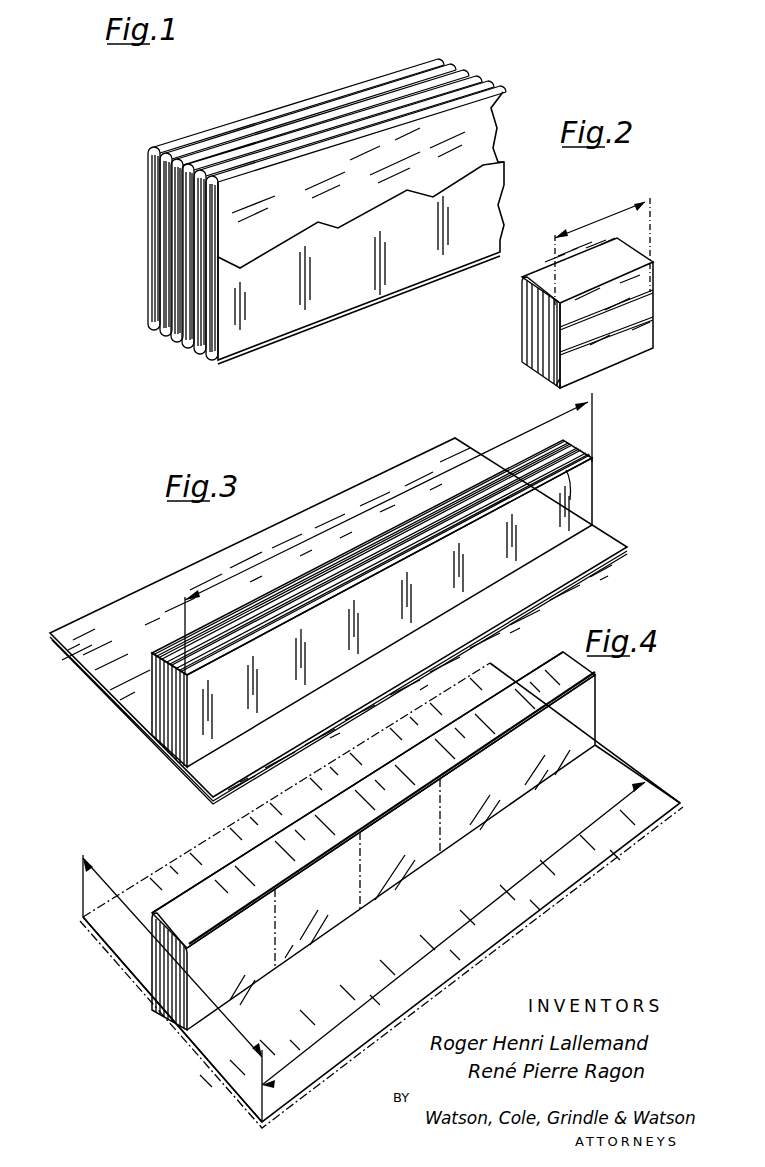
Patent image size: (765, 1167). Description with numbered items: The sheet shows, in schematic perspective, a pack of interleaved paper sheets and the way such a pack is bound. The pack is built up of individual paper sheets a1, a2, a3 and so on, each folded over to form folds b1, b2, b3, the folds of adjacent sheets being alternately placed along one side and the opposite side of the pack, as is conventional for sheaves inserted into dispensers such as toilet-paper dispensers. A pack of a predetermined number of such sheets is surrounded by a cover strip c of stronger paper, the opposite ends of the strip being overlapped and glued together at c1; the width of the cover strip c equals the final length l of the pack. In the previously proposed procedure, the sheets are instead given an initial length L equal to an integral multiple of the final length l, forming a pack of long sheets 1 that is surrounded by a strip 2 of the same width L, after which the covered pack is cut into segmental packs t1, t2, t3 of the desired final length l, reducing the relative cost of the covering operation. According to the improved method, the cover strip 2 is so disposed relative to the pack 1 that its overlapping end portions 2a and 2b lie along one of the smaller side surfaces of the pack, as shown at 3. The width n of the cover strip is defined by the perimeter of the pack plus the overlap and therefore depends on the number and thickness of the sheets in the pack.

In FIG. 1, the interleaved paper sheet a1 is at (148, 190).
In FIG. 2, the interleaved paper sheet a1 is at (528, 302).
In FIG. 1, the interleaved paper sheet a2 is at (160, 233).
In FIG. 2, the interleaved paper sheet a2 is at (532, 332).
In FIG. 1, the interleaved paper sheet a3 is at (172, 260).
In FIG. 2, the interleaved paper sheet a3 is at (527, 360).
In FIG. 1, the fold b1 is at (152, 147).
In FIG. 1, the fold b2 is at (158, 318).
In FIG. 1, the fold b3 is at (170, 153).
In FIG. 2, the cover strip c is at (640, 290).
In FIG. 2, the glued overlap c1 is at (552, 382).
In FIG. 2, the final length of pack l is at (602, 251).
In FIG. 3, the pack of long sheets 1 is at (205, 712).
In FIG. 4, the pack of long sheets 1 is at (180, 982).
In FIG. 3, the cover strip 2 is at (112, 661).
In FIG. 4, the cover strip 2 is at (222, 1048).
In FIG. 4, the overlapping end portion of cover strip 2a is at (160, 923).
In FIG. 4, the overlapping end portion of cover strip 2b is at (214, 835).
In FIG. 4, the smaller side surface of pack 3 is at (175, 916).
In FIG. 4, the width of cover strip n is at (176, 971).
In FIG. 4, the segmental pack t1 is at (277, 935).
In FIG. 4, the segmental pack t2 is at (362, 880).
In FIG. 4, the segmental pack t3 is at (442, 826).
In FIG. 3, the initial length of sheets L is at (388, 533).
In FIG. 4, the initial length of sheets L is at (364, 952).